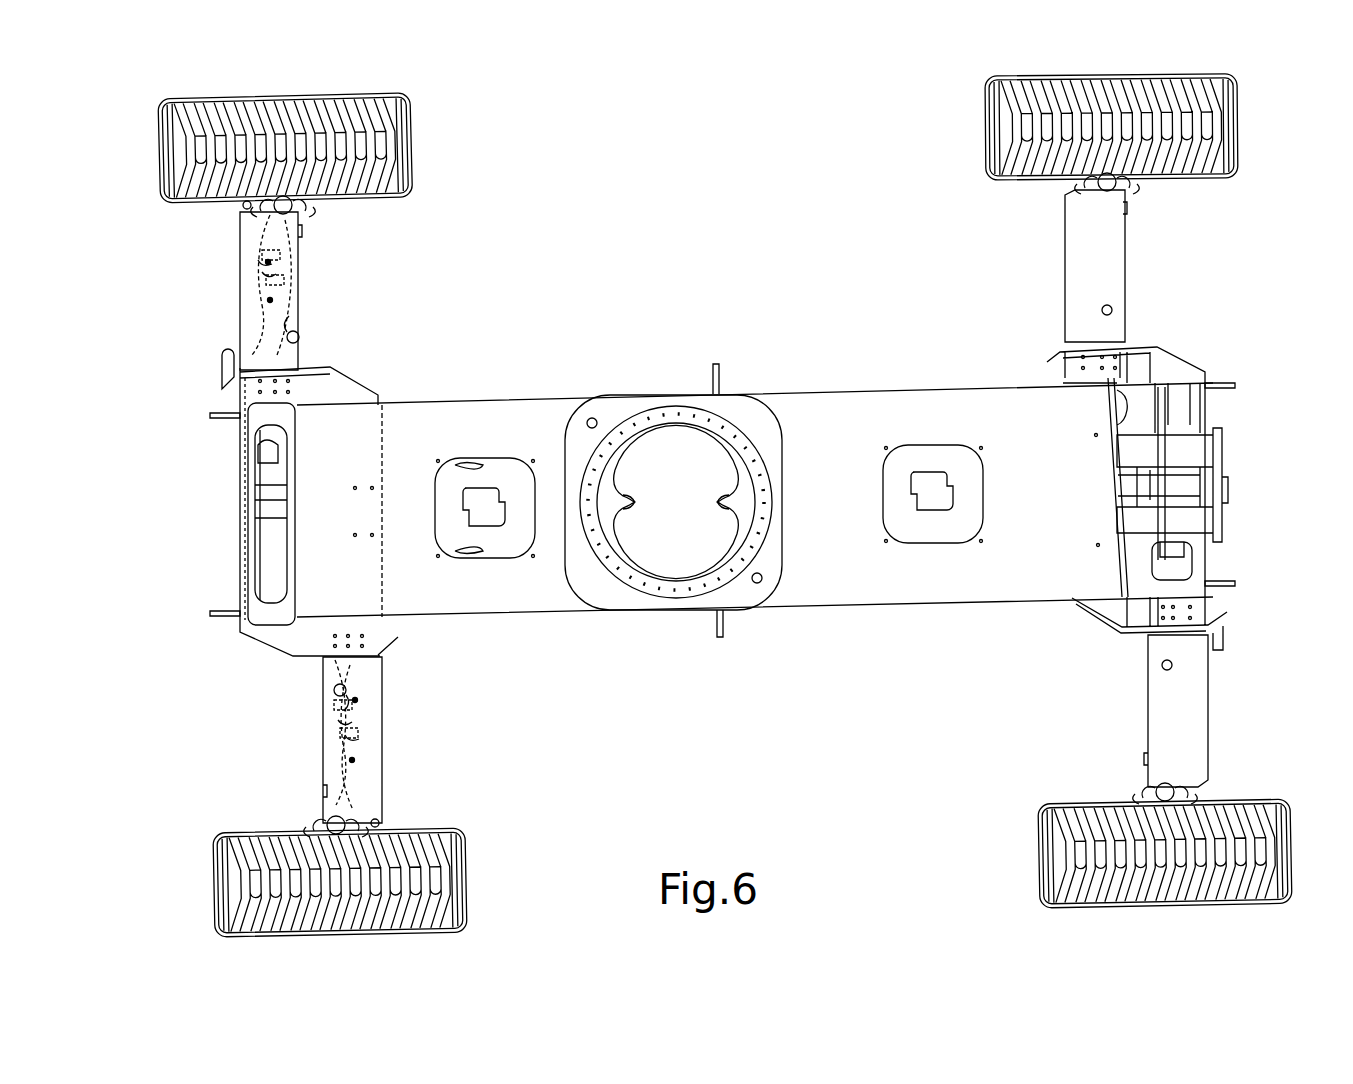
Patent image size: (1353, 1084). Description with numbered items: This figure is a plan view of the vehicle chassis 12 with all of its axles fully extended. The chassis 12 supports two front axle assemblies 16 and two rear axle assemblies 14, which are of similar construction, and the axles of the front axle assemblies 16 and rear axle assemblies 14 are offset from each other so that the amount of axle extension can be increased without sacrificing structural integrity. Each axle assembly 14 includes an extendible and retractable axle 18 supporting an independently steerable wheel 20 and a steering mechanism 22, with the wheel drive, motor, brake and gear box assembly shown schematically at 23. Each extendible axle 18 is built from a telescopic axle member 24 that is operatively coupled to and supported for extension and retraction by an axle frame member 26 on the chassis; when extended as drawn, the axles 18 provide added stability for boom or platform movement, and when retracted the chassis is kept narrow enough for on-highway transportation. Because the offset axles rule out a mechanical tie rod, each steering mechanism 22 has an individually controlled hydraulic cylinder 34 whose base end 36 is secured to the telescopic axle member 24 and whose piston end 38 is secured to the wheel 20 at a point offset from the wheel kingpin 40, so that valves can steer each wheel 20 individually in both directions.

The chassis 12 is at (723, 268).
The rear axle assembly 14 is at (187, 347).
The front axle assembly 16 is at (1157, 333).
The extendible and retractable axle 18 is at (313, 320).
The wheel 20 is at (407, 115).
The steering mechanism 22 is at (246, 298).
The wheel drive, motor, brake and gear box assembly 23 is at (361, 925).
The telescopic axle member 24 is at (295, 318).
The axle frame member 26 is at (388, 409).
The hydraulic cylinder 34 is at (283, 268).
The base end 36 is at (300, 345).
The piston end 38 is at (230, 210).
The wheel kingpin 40 is at (292, 210).